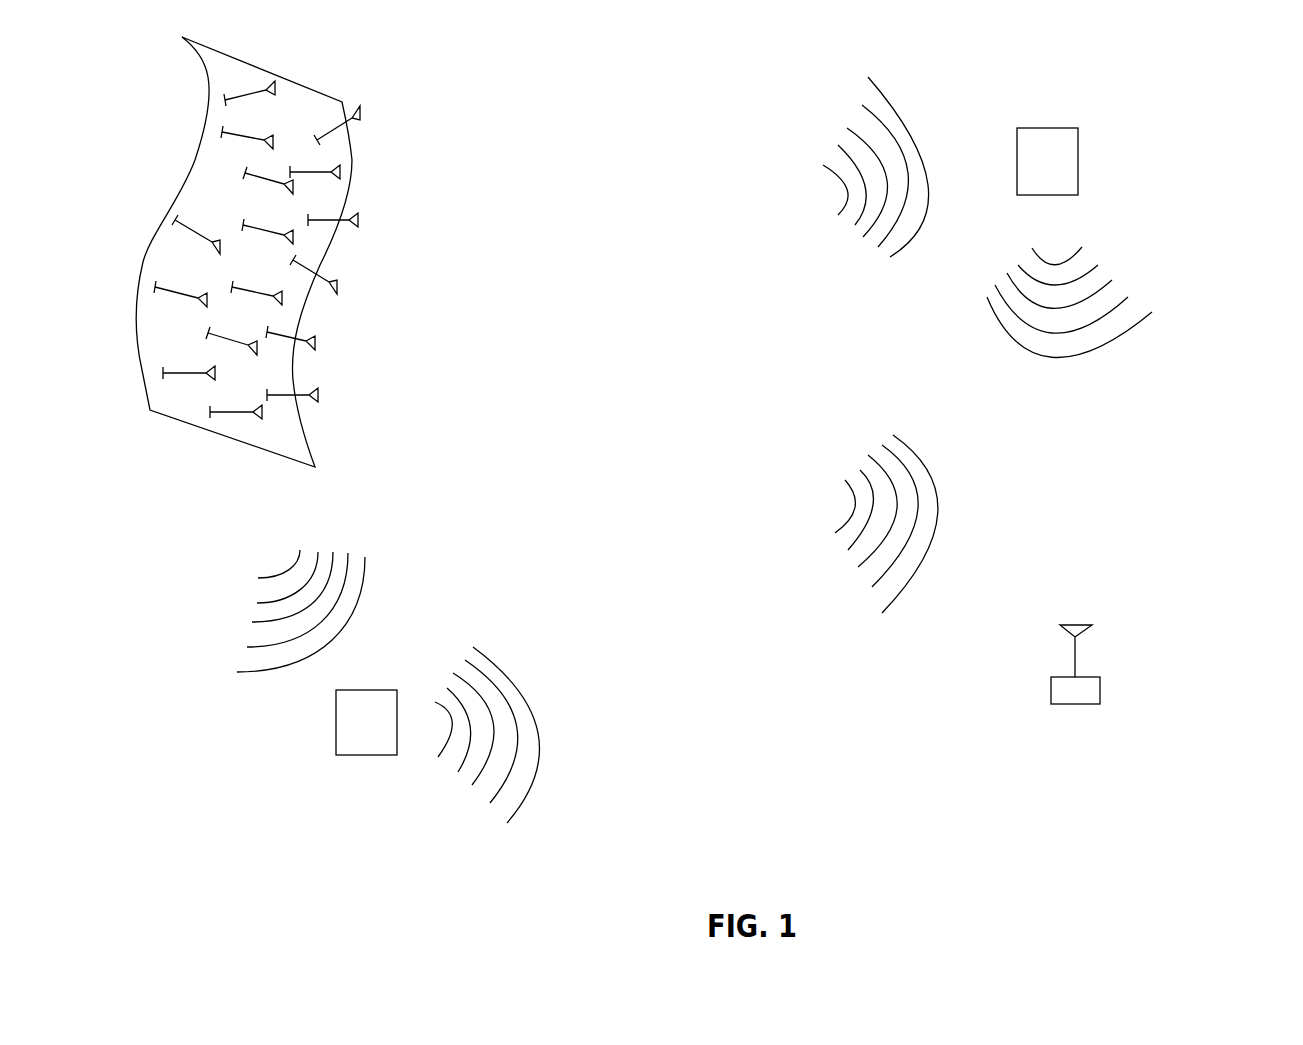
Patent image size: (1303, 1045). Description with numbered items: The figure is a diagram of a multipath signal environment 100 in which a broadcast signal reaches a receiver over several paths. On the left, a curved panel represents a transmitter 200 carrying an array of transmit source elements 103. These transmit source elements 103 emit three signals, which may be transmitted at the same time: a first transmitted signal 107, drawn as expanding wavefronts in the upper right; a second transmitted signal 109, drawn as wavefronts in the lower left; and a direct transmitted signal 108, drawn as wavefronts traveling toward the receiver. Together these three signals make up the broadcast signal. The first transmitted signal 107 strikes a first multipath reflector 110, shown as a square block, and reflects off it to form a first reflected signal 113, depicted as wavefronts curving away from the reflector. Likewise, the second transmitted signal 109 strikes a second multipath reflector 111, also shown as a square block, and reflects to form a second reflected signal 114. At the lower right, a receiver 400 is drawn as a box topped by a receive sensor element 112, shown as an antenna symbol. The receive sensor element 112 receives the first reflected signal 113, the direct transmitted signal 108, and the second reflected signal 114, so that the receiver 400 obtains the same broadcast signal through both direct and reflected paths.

The multipath signal environment 100 is at (681, 375).
The transmitter 200 is at (167, 137).
The transmit source elements 103 is at (358, 220).
The first transmitted signal 107 is at (888, 93).
The direct transmitted signal 108 is at (920, 460).
The second transmitted signal 109 is at (370, 573).
The first multipath reflector 110 is at (1037, 128).
The second multipath reflector 111 is at (336, 722).
The receive sensor element 112 is at (1080, 643).
The first reflected signal 113 is at (1112, 280).
The second reflected signal 114 is at (502, 662).
The receiver 400 is at (1105, 679).